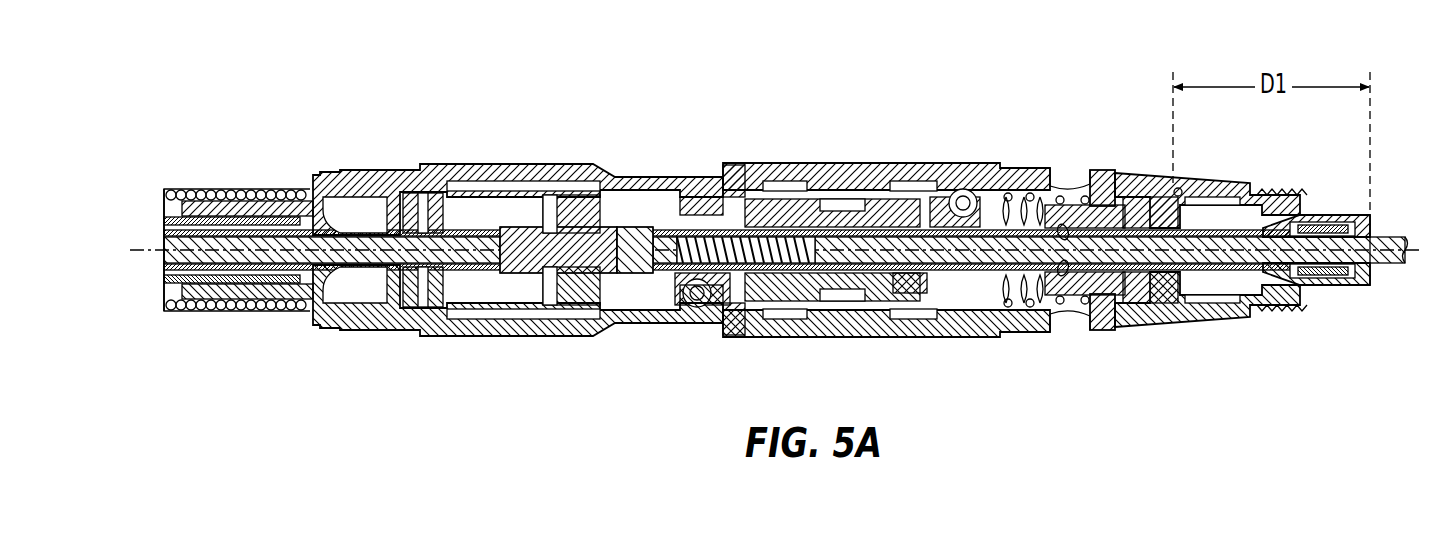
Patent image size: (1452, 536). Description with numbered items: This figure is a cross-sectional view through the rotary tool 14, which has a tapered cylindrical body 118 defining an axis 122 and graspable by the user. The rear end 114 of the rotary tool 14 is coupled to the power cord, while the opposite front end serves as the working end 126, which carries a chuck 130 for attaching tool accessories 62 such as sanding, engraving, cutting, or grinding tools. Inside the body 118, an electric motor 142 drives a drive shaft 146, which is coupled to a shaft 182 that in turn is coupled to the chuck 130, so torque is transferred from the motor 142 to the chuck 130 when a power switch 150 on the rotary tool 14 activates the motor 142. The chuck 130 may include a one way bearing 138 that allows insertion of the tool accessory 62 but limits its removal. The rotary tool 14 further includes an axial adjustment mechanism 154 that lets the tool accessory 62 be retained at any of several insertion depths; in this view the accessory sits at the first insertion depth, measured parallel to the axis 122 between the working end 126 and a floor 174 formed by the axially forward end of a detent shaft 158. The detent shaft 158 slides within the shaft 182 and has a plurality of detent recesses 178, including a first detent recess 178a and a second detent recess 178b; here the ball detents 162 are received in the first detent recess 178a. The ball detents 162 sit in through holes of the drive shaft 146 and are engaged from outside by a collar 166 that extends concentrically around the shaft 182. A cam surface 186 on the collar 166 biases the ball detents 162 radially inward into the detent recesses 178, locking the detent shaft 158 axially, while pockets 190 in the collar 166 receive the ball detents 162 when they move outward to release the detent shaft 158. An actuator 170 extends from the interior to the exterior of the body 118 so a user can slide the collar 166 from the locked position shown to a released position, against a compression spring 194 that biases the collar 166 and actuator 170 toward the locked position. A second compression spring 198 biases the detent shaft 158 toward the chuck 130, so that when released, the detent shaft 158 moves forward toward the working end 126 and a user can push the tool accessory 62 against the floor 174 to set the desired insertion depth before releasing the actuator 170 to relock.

The rotary tool 14 is at (524, 104).
The tool accessory 62 is at (1405, 270).
The rear end 114 is at (228, 157).
The tapered cylindrical body 118 is at (572, 167).
The axis 122 is at (201, 320).
The working end 126 is at (1383, 167).
The chuck 130 is at (1372, 287).
The one way bearing 138 is at (1313, 186).
The electric motor 142 is at (420, 310).
The drive shaft 146 is at (487, 262).
The power switch 150 is at (725, 168).
The axial adjustment mechanism 154 is at (1105, 392).
The detent shaft 158 is at (882, 175).
The ball detents 162 is at (1065, 178).
The collar 166 is at (1110, 172).
The actuator 170 is at (1102, 325).
The floor 174 is at (1207, 303).
The detent recesses 178 is at (985, 182).
The first detent recess 178a is at (1180, 177).
The second detent recess 178b is at (955, 182).
The shaft 182 is at (1255, 297).
The cam surface 186 is at (1060, 305).
The pockets 190 is at (1082, 302).
The compression spring 194 is at (1013, 180).
The compression spring 198 is at (777, 262).